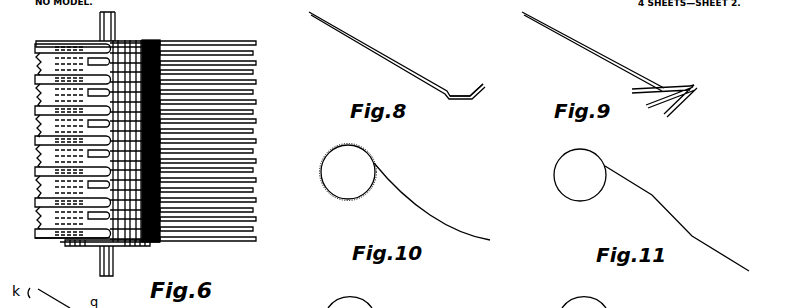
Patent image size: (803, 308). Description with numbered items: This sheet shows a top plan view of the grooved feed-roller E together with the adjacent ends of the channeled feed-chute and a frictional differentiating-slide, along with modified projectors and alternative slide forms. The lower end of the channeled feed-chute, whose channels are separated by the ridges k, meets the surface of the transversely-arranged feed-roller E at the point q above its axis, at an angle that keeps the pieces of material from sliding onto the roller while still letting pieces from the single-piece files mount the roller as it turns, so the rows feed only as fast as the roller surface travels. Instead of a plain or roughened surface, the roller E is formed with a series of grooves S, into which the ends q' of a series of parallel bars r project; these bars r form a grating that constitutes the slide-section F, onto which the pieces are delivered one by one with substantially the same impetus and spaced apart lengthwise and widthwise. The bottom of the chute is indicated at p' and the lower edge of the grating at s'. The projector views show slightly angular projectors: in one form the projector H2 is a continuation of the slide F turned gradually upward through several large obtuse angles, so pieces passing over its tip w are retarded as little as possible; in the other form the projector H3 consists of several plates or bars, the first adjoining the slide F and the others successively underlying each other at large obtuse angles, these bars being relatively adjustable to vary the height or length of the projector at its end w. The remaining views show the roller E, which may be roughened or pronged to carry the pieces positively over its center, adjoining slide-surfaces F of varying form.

In FIG. 6, the ridges k is at (36, 200).
In FIG. 6, the grooves S is at (122, 50).
In FIG. 6, the ends of parallel bars q' is at (151, 149).
In FIG. 6, the parallel bars r is at (213, 141).
In FIG. 6, the slide-section F is at (208, 246).
In FIG. 8, the slide-section F is at (397, 55).
In FIG. 9, the slide-section F is at (593, 51).
In FIG. 10, the slide-section F is at (432, 201).
In FIG. 11, the slide-section F is at (677, 218).
In FIG. 6, the feed-roller E is at (116, 144).
In FIG. 10, the feed-roller E is at (348, 172).
In FIG. 11, the feed-roller E is at (580, 175).
In FIG. 6, the point q is at (107, 248).
In FIG. 6, the strip s' is at (110, 251).
In FIG. 6, the plate p' is at (71, 249).
In FIG. 8, the hook end H2 is at (460, 80).
In FIG. 9, the hook end H3 is at (664, 88).
In FIG. 8, the wire tip w is at (476, 85).
In FIG. 9, the wire tip w is at (688, 81).